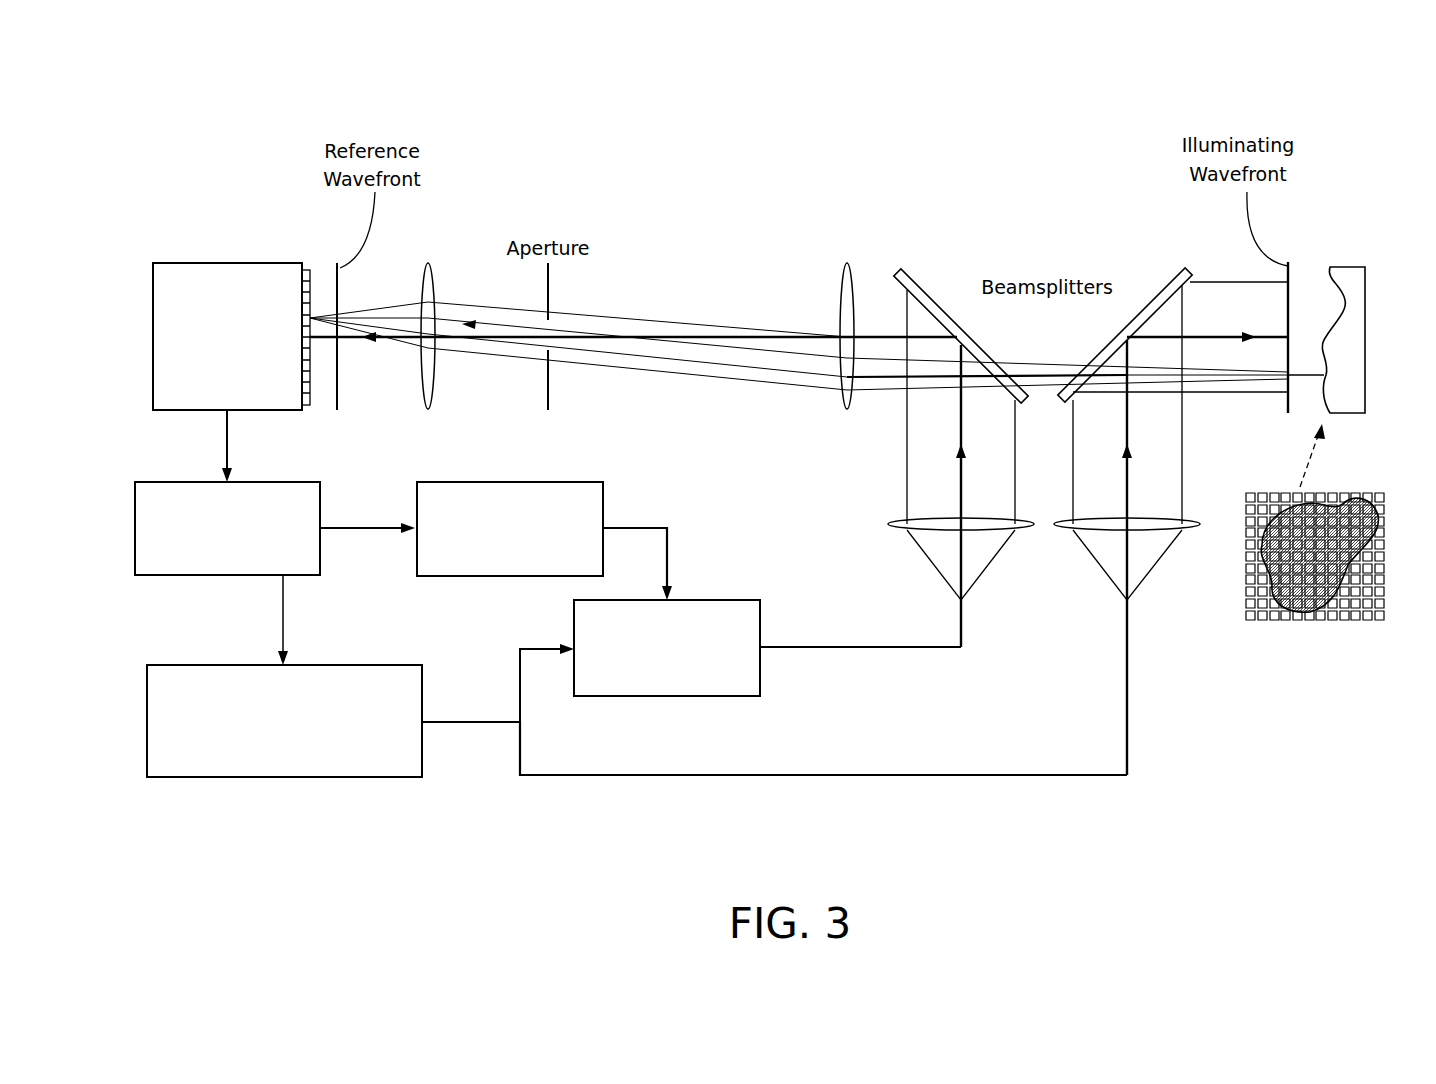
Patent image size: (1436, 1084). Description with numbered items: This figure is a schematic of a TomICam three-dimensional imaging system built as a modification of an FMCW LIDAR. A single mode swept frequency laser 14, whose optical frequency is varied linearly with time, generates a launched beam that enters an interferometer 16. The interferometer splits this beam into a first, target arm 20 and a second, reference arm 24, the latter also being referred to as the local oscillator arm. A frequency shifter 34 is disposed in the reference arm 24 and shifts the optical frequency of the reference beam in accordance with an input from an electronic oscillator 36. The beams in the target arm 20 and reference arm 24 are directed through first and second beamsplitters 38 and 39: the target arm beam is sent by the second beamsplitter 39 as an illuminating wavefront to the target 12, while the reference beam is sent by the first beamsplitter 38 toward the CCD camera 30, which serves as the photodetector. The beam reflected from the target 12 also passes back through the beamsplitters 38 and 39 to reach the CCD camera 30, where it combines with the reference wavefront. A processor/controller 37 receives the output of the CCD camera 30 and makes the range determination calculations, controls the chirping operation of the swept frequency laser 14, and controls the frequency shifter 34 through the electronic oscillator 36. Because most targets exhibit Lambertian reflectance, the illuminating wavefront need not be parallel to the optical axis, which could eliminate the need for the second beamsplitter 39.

The target 12 is at (1367, 352).
The swept frequency laser 14 is at (197, 665).
The interferometer 16 is at (1208, 752).
The target arm 20 is at (947, 778).
The reference arm 24 is at (963, 630).
The CCD camera 30 is at (215, 262).
The frequency shifter 34 is at (637, 700).
The electronic oscillator 36 is at (603, 498).
The processor/controller 37 is at (172, 482).
The first beamsplitter 38 is at (925, 285).
The second beamsplitter 39 is at (1150, 305).